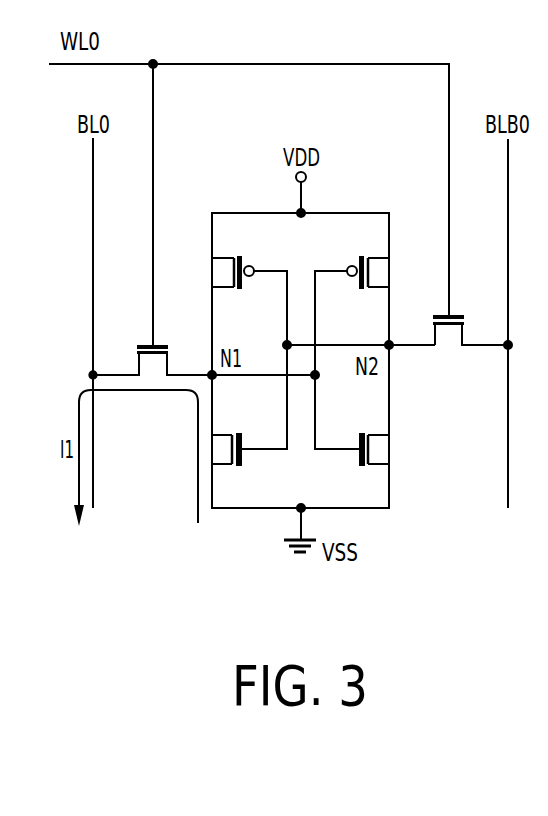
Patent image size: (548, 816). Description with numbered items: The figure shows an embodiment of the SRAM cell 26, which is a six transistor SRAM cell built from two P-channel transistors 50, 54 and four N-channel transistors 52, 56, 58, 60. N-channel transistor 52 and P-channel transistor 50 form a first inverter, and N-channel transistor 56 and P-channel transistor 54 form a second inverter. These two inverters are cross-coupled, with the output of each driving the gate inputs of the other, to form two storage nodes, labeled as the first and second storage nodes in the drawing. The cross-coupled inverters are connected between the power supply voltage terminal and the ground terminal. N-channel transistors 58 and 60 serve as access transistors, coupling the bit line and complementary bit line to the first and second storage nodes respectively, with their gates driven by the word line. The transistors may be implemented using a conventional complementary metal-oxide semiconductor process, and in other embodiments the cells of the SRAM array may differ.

The SRAM cell 26 is at (99, 592).
The P-channel transistor 50 is at (228, 272).
The N-channel transistor 52 is at (238, 432).
The P-channel transistor 54 is at (373, 271).
The N-channel transistor 56 is at (373, 449).
The N-channel transistor 58 is at (143, 337).
The N-channel transistor 60 is at (449, 327).